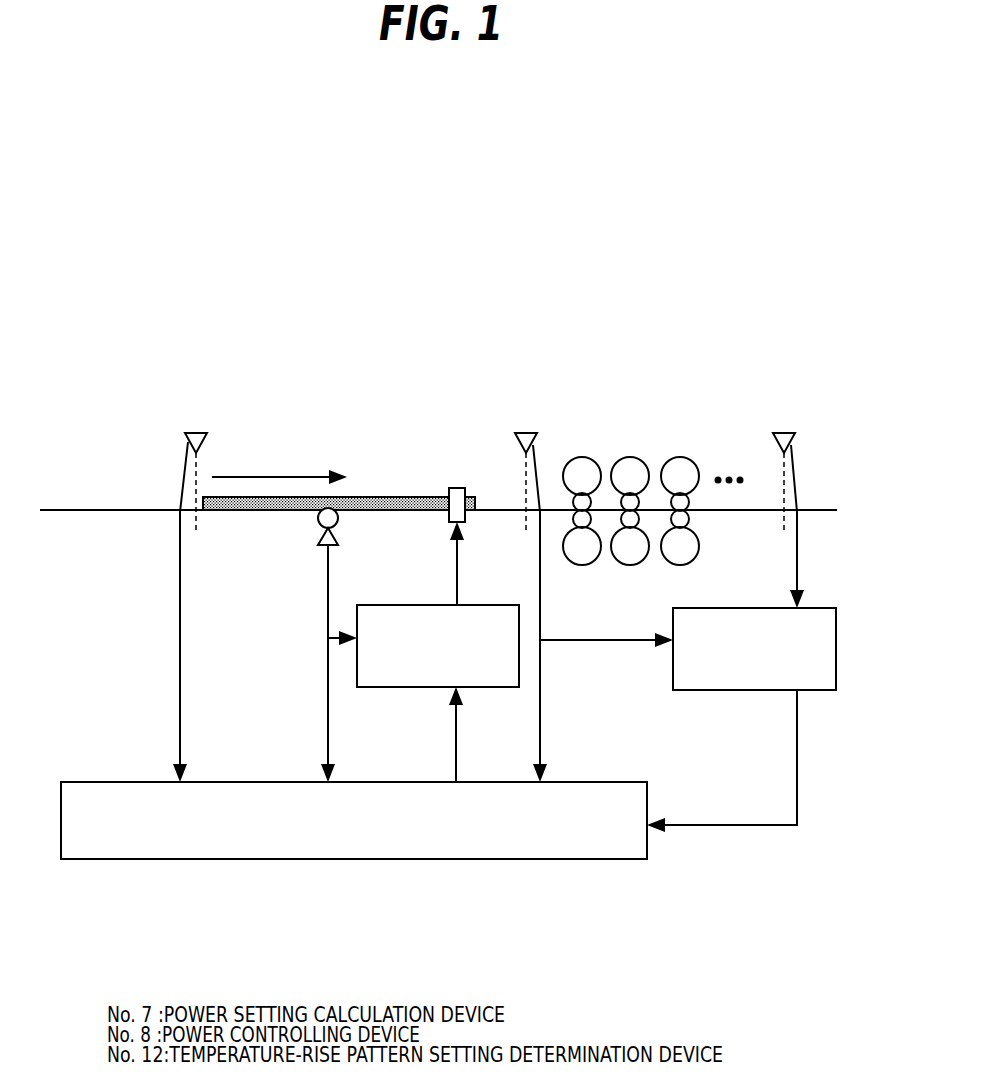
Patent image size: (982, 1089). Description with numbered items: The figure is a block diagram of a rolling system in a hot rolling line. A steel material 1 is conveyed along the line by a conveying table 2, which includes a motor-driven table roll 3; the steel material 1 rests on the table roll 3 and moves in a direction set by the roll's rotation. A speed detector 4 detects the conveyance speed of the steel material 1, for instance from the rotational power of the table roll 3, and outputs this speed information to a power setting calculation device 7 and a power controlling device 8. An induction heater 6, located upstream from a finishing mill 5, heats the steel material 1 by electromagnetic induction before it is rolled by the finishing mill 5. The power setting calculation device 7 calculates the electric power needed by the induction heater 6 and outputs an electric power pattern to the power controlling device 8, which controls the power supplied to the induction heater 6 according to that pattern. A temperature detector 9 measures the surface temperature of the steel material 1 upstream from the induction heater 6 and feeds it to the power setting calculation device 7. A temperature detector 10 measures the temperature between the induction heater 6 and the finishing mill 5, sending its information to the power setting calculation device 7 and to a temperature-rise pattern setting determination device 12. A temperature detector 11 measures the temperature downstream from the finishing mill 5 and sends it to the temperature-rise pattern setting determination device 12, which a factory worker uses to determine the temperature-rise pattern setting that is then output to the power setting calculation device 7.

The steel material 1 is at (388, 497).
The conveying table 2 is at (82, 510).
The table roll 3 is at (316, 521).
The speed detector 4 is at (318, 545).
The finishing mill 5 is at (558, 451).
The induction heater 6 is at (455, 488).
The power setting calculation device 7 is at (604, 782).
The power controlling device 8 is at (395, 605).
The temperature detector 9 is at (207, 440).
The temperature detector 10 is at (537, 438).
The temperature detector 11 is at (795, 438).
The temperature-rise pattern setting determination device 12 is at (752, 608).